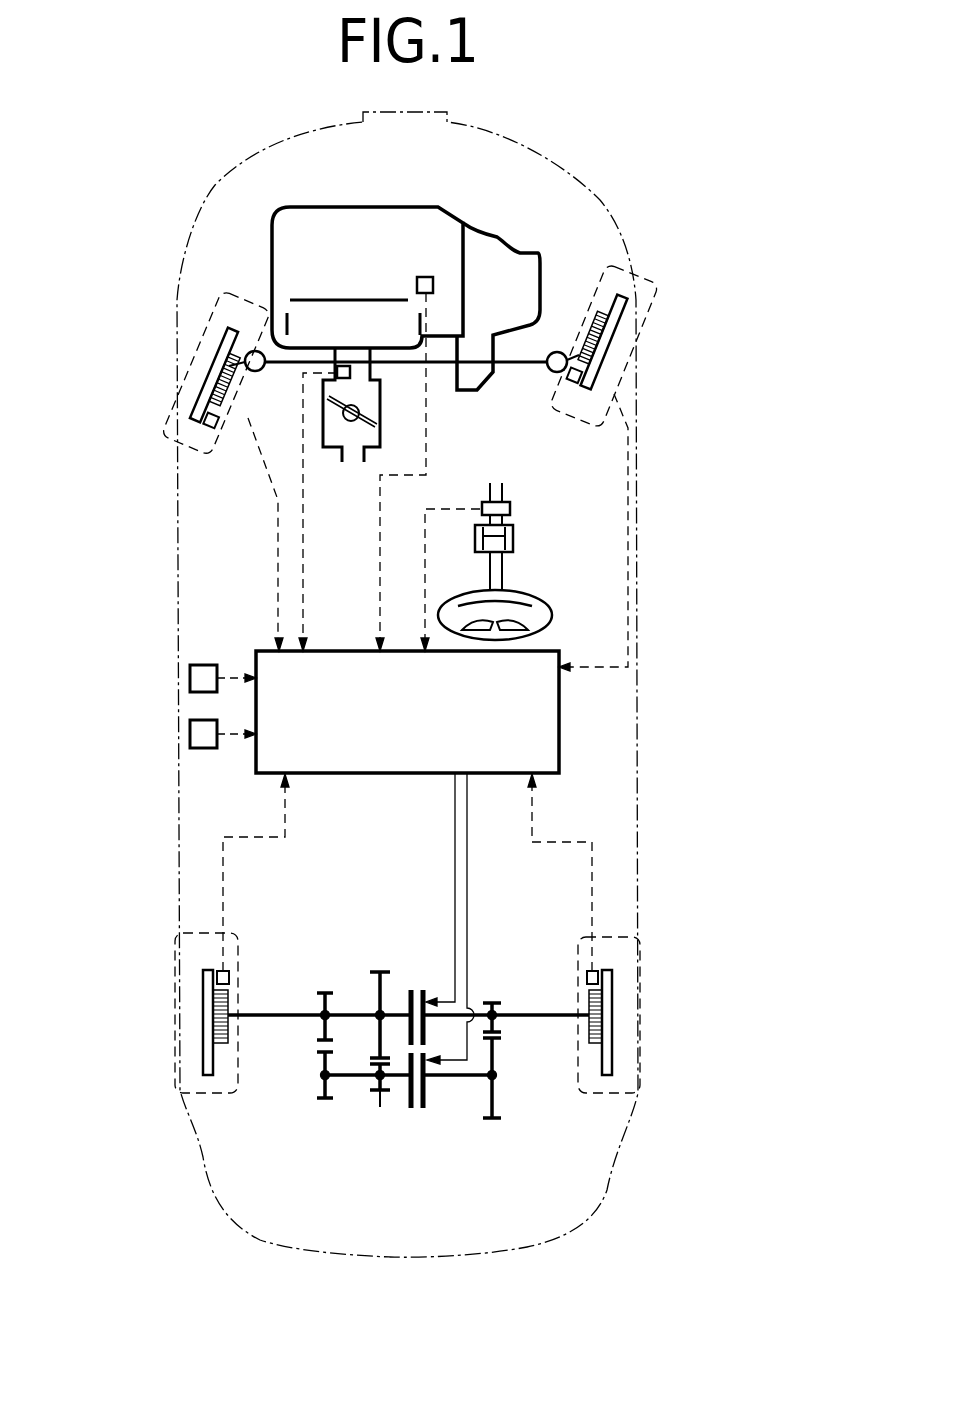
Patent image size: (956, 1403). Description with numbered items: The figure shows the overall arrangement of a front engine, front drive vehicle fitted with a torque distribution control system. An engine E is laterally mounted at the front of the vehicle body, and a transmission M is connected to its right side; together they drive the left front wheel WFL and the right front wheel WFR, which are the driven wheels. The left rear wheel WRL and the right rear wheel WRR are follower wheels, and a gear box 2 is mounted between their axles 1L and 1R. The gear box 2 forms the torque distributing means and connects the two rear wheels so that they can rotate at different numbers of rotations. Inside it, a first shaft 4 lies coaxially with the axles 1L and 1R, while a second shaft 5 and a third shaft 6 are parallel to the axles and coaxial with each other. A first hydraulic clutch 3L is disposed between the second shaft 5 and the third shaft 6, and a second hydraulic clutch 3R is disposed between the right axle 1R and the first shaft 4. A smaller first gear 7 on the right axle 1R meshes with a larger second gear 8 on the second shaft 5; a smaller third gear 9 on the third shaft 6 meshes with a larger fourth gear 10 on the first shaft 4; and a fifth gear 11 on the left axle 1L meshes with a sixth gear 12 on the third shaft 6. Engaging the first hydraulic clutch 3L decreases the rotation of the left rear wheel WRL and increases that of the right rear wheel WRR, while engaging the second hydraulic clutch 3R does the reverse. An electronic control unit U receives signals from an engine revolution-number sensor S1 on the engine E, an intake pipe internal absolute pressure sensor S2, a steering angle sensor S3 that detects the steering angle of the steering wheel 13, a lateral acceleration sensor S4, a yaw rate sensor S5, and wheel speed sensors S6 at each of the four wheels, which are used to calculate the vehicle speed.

The engine E is at (337, 240).
The transmission M is at (482, 248).
The electronic control unit U is at (410, 732).
The engine revolution-number sensor S1 is at (418, 280).
The intake pipe internal absolute pressure sensor S2 is at (343, 366).
The steering angle sensor S3 is at (482, 505).
The lateral acceleration sensor S4 is at (212, 668).
The yaw rate sensor S5 is at (200, 748).
The wheel speed sensor S6 is at (243, 417).
The steering wheel 13 is at (528, 602).
The left front wheel WFL is at (165, 332).
The right front wheel WFR is at (617, 304).
The left rear wheel WRL is at (178, 1024).
The right rear wheel WRR is at (638, 1006).
The left axle 1L is at (287, 1018).
The right axle 1R is at (556, 1018).
The gear box 2 is at (401, 925).
The second hydraulic clutch 3R is at (424, 982).
The first hydraulic clutch 3L is at (417, 1122).
The first shaft 4 is at (391, 1014).
The second shaft 5 is at (448, 1080).
The third shaft 6 is at (356, 1080).
The first gear 7 is at (494, 1003).
The second gear 8 is at (499, 1120).
The third gear 9 is at (380, 1108).
The fourth gear 10 is at (378, 971).
The fifth gear 11 is at (330, 990).
The sixth gear 12 is at (318, 1108).